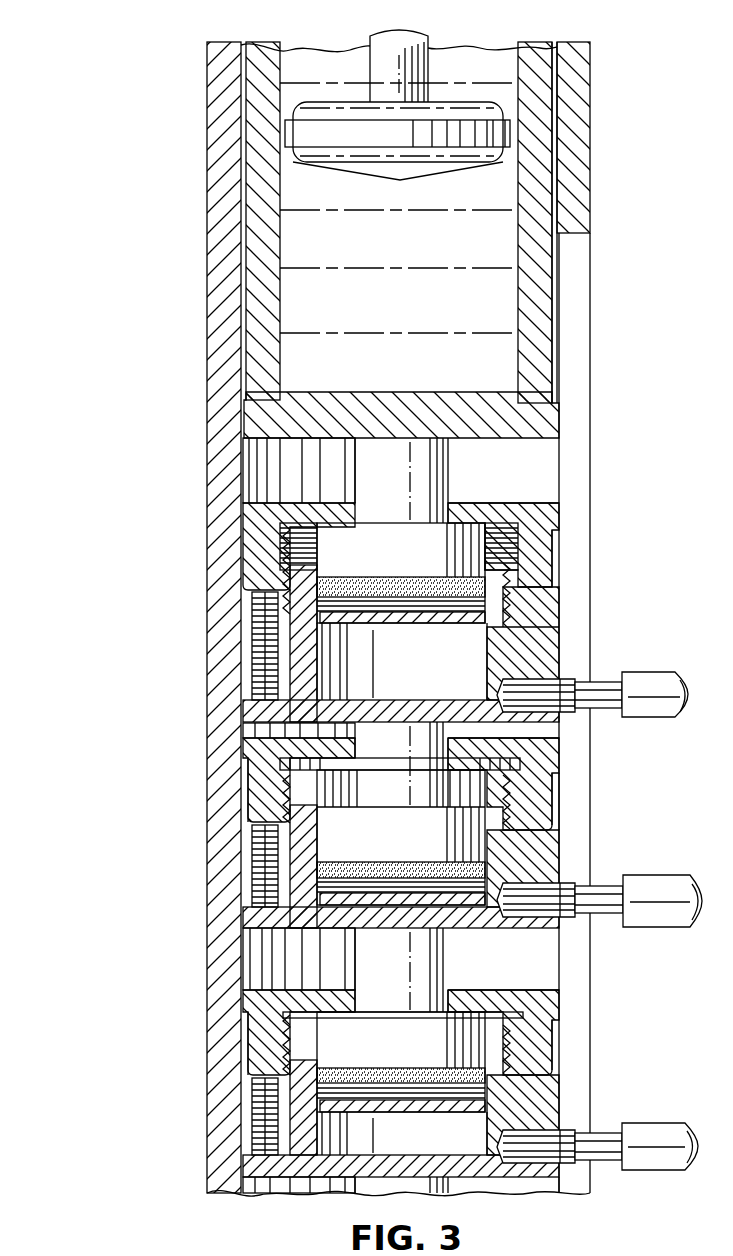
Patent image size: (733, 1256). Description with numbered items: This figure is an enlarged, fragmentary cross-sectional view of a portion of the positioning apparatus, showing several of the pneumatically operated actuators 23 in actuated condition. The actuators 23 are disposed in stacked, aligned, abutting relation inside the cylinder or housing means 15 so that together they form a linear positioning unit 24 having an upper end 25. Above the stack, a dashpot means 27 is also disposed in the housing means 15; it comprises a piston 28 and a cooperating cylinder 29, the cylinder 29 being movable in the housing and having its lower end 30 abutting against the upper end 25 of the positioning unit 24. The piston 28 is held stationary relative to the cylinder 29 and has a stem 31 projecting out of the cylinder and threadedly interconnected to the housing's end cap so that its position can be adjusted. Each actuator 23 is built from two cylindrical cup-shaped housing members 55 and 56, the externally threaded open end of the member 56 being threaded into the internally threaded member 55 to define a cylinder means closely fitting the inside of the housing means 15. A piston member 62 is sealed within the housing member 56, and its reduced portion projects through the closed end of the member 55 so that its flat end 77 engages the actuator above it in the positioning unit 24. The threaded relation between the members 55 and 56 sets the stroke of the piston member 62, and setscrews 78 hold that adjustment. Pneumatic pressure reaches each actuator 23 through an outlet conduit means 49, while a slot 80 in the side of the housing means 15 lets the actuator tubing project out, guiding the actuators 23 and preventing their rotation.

The cylinder 15 is at (218, 552).
The pneumatically operated actuator 23 is at (558, 636).
The linear positioning unit 24 is at (563, 800).
The upper end of the positioning unit 25 is at (492, 504).
The dashpot means 27 is at (552, 295).
The piston 28 is at (503, 133).
The cylinder 29 is at (548, 357).
The lower end 30 is at (540, 438).
The stem 31 is at (420, 58).
The outlet conduit means 49 is at (650, 677).
The cup-shaped housing member 55 is at (548, 557).
The cup-shaped housing member 56 is at (550, 663).
The piston member 62 is at (432, 478).
The flat end 77 is at (408, 440).
The setscrew 78 is at (252, 645).
The slot 80 is at (580, 512).